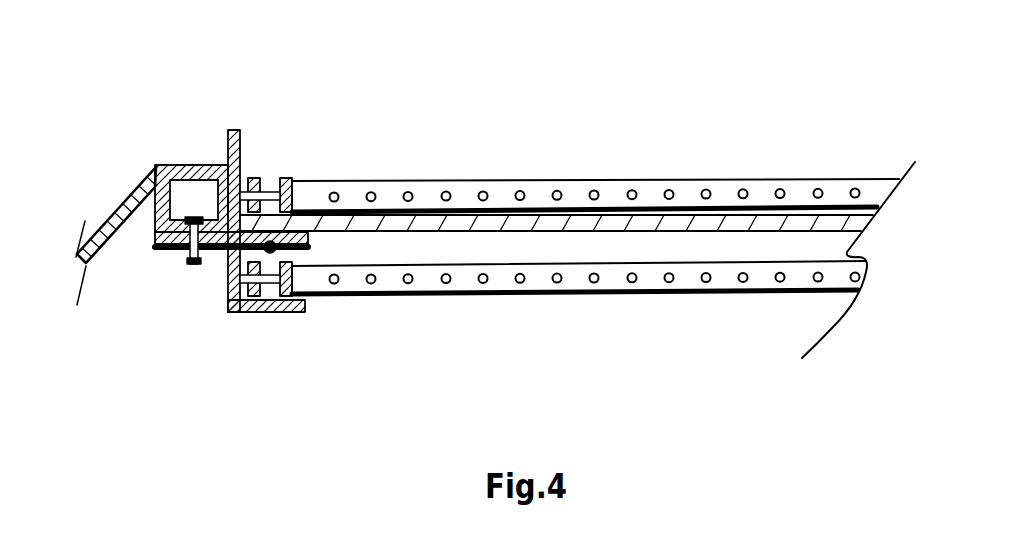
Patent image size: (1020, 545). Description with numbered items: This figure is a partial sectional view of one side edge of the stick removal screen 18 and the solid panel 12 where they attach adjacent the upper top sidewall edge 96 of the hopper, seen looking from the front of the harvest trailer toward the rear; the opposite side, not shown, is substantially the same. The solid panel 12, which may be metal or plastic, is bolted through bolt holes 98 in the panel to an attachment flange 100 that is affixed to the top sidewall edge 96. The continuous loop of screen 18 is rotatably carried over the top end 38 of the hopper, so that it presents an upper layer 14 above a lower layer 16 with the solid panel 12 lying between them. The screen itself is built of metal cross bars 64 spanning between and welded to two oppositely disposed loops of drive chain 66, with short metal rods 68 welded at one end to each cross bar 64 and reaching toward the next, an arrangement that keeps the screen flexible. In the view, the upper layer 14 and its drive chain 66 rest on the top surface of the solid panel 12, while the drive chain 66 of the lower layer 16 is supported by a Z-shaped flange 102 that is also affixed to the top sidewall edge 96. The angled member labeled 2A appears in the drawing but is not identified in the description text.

The angled frame member 2A is at (112, 211).
The top sidewall edge 96 is at (228, 172).
The Z-shaped flange 102 is at (242, 312).
The attachment flange 100 is at (232, 265).
The bolt holes 98 is at (203, 263).
The drive chain 66 is at (275, 310).
The upper layer 14 is at (803, 180).
The lower layer 16 is at (708, 297).
The cross bars 64 is at (422, 284).
The short metal rods 68 is at (591, 282).
The solid panel 12 is at (721, 222).
The stick removal screen 18 is at (387, 280).
The top end 38 is at (471, 170).